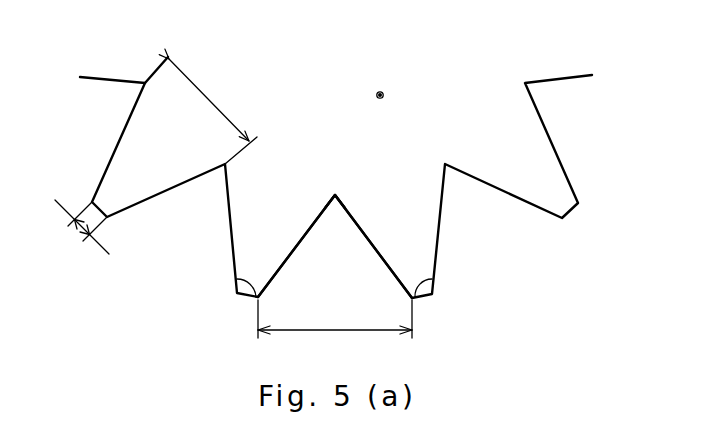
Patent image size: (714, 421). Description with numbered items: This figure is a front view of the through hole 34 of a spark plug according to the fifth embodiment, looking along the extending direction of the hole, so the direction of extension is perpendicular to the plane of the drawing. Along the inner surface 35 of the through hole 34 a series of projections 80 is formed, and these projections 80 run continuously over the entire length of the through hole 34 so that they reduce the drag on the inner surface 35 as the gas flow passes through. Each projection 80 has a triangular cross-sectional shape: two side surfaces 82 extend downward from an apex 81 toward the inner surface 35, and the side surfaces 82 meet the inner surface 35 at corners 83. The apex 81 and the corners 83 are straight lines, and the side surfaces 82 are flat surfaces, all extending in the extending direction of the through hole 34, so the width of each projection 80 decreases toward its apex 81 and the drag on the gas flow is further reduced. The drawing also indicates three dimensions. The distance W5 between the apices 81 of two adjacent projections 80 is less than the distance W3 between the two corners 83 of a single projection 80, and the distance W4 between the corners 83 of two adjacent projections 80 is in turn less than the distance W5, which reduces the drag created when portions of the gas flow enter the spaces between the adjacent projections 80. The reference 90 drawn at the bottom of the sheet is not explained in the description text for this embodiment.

The projection 80 is at (110, 93).
The apex 81 is at (336, 196).
The side surface 82 is at (313, 218).
The corner 83 is at (236, 281).
The through hole 34 is at (383, 94).
The inner surface 35 is at (433, 277).
The base member 90 is at (105, 420).
The distance between corners of each projection W3 is at (334, 325).
The distance between corners of adjacent projections W4 is at (70, 228).
The distance between apices of adjacent projections W5 is at (208, 97).